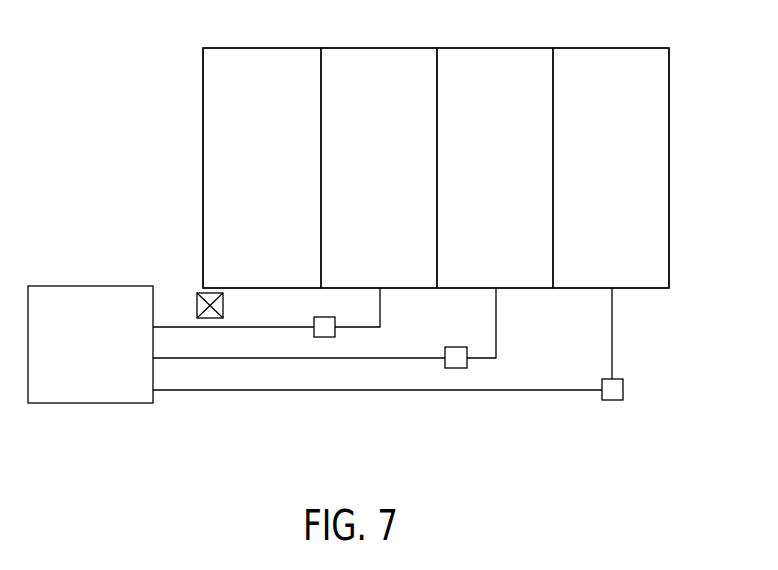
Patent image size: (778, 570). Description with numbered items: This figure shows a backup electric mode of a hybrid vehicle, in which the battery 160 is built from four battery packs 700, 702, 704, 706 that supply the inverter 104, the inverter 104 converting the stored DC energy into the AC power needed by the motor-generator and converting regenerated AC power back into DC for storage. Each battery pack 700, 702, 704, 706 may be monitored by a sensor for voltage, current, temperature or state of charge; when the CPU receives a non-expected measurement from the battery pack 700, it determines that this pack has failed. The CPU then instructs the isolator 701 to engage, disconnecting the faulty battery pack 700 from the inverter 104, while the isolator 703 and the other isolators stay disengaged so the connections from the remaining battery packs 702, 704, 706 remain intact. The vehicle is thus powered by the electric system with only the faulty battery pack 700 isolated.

The inverter 104 is at (92, 285).
The battery 160 is at (203, 181).
The battery pack 700 is at (262, 57).
The battery pack 702 is at (378, 57).
The battery pack 704 is at (495, 55).
The battery pack 706 is at (612, 55).
The isolator 701 is at (210, 318).
The isolator 703 is at (455, 368).